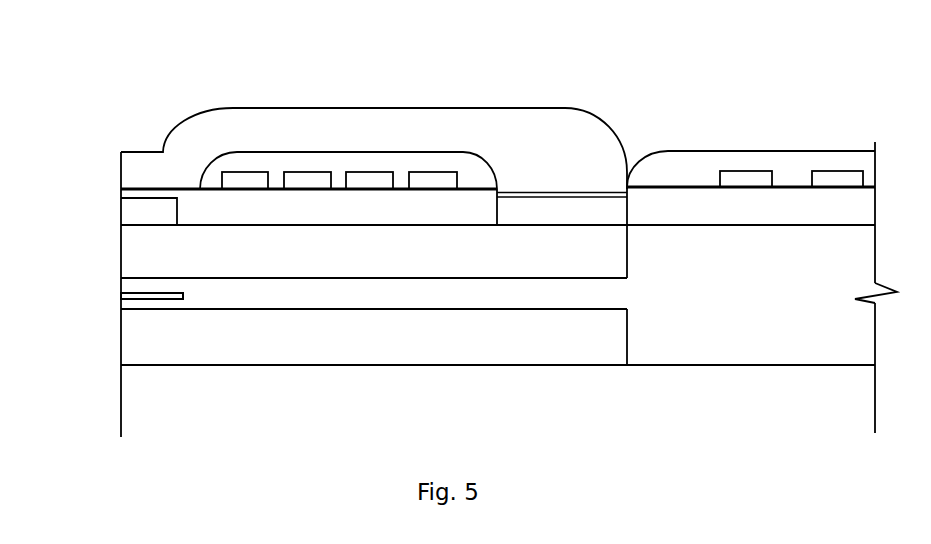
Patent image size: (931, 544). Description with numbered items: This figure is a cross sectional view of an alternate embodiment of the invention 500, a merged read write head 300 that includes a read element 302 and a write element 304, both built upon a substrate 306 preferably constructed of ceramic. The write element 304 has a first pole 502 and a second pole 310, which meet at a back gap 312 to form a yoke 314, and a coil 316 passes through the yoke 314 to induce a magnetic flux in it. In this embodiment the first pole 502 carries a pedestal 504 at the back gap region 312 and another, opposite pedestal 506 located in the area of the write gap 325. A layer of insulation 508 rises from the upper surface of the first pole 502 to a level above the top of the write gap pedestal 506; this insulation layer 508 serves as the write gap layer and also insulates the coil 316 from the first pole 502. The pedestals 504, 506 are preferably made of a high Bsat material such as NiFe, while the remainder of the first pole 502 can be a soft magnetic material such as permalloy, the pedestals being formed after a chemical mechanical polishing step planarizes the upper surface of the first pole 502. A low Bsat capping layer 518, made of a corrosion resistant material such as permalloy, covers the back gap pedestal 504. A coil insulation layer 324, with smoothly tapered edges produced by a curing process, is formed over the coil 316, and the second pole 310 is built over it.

The alternate embodiment of the invention 500 is at (138, 63).
The merged read write head 300 is at (78, 360).
The read element 302 is at (108, 225).
The write element 304 is at (70, 132).
The substrate 306 is at (160, 408).
The second pole 310 is at (410, 125).
The back gap 312 is at (593, 175).
The yoke 314 is at (596, 108).
The coil 316 is at (308, 182).
The coil insulation layer 324 is at (385, 160).
The write gap 325 is at (121, 190).
The first pole 502 is at (607, 265).
The pedestal 504 is at (593, 208).
The pedestal 506 is at (163, 210).
The layer of insulation 508 is at (315, 210).
The low Bsat capping layer 518 is at (552, 193).